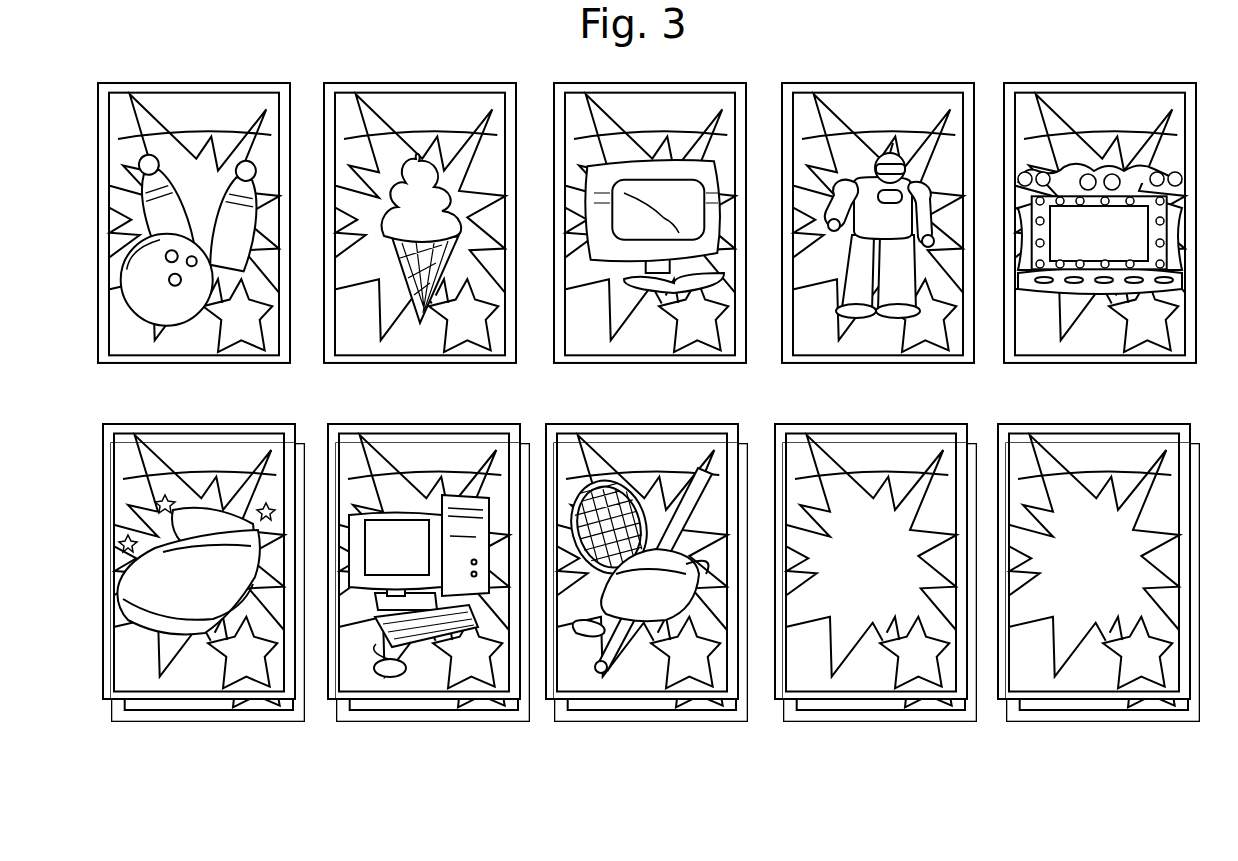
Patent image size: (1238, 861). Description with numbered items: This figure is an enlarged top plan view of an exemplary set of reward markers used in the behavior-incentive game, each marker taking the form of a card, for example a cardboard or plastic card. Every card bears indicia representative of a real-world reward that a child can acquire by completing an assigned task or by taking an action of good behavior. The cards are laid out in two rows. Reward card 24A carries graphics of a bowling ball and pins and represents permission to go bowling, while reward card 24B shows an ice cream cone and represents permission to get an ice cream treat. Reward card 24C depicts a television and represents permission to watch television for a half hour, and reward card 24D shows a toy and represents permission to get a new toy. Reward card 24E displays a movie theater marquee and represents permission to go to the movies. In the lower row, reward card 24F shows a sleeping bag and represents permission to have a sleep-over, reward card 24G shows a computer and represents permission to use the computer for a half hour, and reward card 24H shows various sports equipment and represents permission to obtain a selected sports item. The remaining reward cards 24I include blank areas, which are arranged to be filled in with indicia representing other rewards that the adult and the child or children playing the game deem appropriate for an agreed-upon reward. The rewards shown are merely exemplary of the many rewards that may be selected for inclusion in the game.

The reward card 24A is at (158, 108).
The reward card 24B is at (392, 108).
The reward card 24C is at (630, 112).
The reward card 24D is at (850, 108).
The reward card 24E is at (1068, 112).
The reward card 24F is at (196, 667).
The reward card 24G is at (432, 670).
The reward card 24H is at (638, 673).
The reward cards with blank areas 24I is at (870, 677).